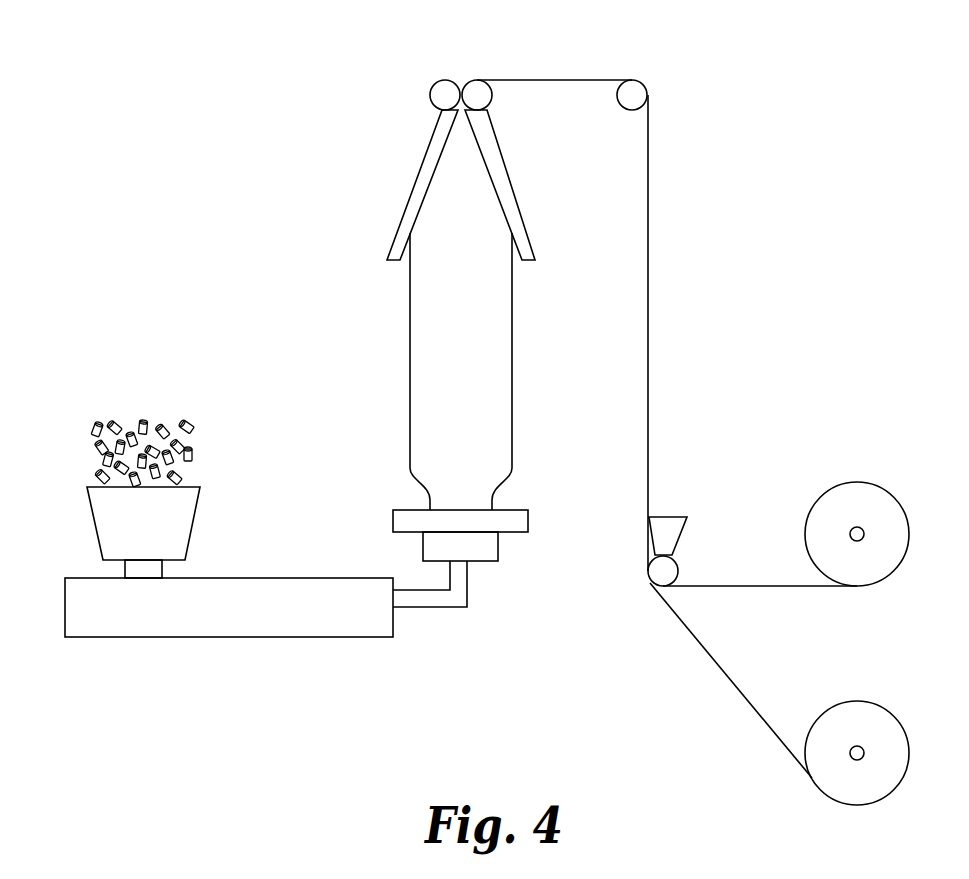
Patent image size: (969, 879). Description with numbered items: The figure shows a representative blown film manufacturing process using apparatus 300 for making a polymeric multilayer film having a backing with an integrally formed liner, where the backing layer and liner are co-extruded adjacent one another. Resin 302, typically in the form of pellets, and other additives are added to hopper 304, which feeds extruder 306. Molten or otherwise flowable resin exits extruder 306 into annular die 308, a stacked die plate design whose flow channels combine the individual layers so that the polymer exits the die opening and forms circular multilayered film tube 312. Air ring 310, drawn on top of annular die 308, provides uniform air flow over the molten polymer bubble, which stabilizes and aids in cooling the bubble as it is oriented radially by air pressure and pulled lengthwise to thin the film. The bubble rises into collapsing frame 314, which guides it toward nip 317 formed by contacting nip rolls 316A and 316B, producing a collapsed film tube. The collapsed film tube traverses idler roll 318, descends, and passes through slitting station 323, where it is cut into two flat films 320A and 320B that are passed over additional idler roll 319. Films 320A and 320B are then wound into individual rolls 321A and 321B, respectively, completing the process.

The apparatus 300 is at (186, 53).
The resin 302 is at (193, 430).
The hopper 304 is at (97, 523).
The extruder 306 is at (290, 615).
The annular die 308 is at (482, 556).
The air ring 310 is at (532, 522).
The multilayered film tube 312 is at (492, 383).
The collapsing frame 314 is at (505, 175).
The nip roll 316A is at (437, 84).
The nip roll 316B is at (488, 108).
The nip 317 is at (460, 82).
The idler roll 318 is at (633, 97).
The idler roll 319 is at (663, 573).
The flat film 320A is at (747, 587).
The flat film 320B is at (732, 692).
The roll 321A is at (853, 483).
The roll 321B is at (853, 702).
The slitting station 323 is at (668, 517).